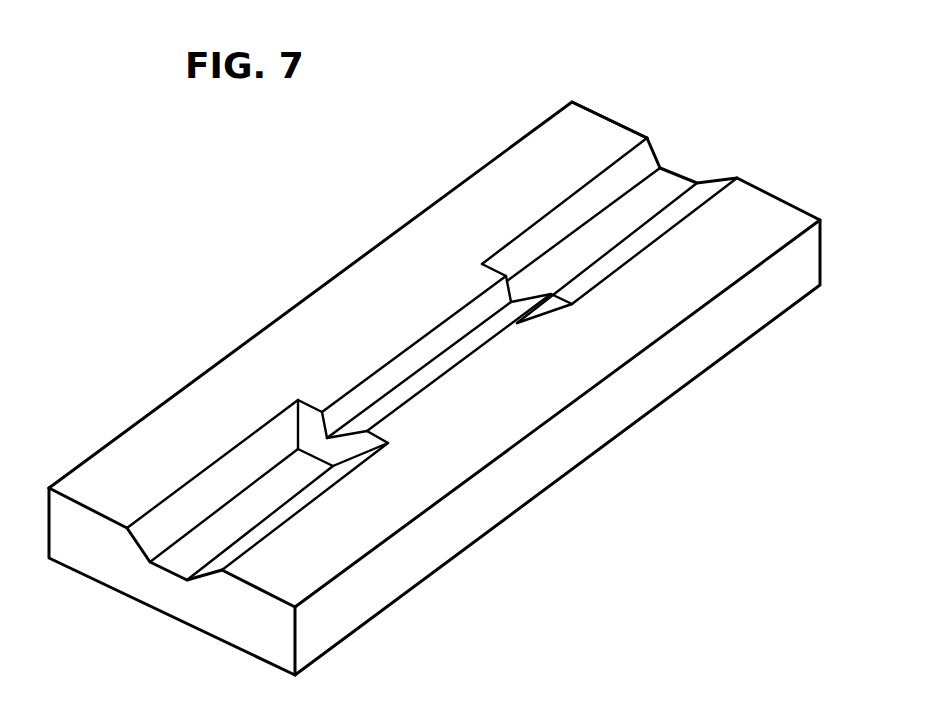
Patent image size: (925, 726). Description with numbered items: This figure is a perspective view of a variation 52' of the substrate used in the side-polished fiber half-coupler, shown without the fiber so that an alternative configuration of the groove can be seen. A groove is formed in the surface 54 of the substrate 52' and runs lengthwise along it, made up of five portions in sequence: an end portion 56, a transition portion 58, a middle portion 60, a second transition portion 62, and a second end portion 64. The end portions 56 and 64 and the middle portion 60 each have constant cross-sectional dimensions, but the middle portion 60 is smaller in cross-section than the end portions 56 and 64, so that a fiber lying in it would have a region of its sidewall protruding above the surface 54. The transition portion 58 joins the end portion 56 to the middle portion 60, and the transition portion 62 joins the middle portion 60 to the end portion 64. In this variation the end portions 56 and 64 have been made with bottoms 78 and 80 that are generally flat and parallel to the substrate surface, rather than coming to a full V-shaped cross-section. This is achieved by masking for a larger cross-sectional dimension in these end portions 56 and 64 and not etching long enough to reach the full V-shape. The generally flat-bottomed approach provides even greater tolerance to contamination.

The substrate 52' is at (434, 388).
The surface of the substrate 54 is at (580, 140).
The end groove portion 56 is at (158, 530).
The transition portion 58 is at (303, 424).
The middle groove portion 60 is at (378, 382).
The transition portion 62 is at (507, 276).
The end groove portion 64 is at (637, 167).
The bottom of groove portion 78 is at (263, 497).
The bottom of groove portion 80 is at (603, 237).